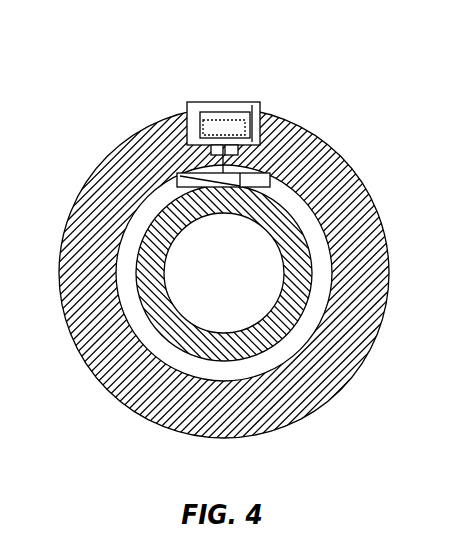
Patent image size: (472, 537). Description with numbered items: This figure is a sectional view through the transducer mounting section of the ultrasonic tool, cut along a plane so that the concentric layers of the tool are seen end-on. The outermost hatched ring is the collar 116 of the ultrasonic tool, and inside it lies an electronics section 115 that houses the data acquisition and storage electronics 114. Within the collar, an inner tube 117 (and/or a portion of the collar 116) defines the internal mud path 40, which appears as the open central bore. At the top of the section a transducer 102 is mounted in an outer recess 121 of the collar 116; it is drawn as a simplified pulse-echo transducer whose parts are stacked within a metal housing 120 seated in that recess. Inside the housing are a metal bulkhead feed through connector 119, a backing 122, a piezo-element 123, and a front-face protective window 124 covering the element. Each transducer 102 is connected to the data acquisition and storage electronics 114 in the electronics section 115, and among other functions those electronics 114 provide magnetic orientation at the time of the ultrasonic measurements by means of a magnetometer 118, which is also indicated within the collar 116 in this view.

The internal mud path 40 is at (212, 272).
The transducer 102 is at (247, 92).
The data acquisition and storage electronics 114 is at (177, 182).
The electronics section 115 is at (187, 368).
The collar 116 is at (160, 425).
The inner tube 117 is at (168, 327).
The magnetometer 118 is at (294, 182).
The metal bulkhead feed through connector 119 is at (131, 134).
The metal housing 120 is at (187, 110).
The outer recess 121 is at (254, 116).
The backing 122 is at (262, 127).
The piezo-element 123 is at (216, 115).
The front-face protective window 124 is at (212, 112).